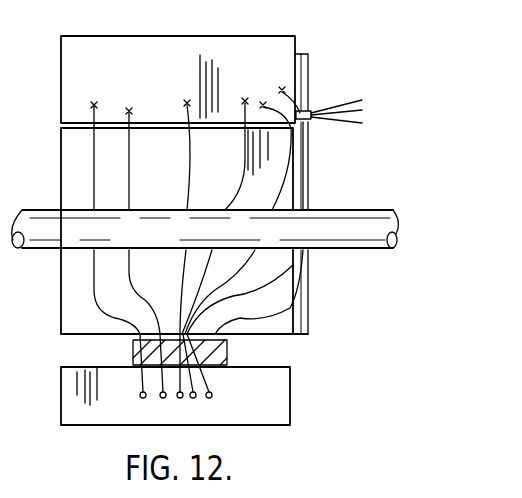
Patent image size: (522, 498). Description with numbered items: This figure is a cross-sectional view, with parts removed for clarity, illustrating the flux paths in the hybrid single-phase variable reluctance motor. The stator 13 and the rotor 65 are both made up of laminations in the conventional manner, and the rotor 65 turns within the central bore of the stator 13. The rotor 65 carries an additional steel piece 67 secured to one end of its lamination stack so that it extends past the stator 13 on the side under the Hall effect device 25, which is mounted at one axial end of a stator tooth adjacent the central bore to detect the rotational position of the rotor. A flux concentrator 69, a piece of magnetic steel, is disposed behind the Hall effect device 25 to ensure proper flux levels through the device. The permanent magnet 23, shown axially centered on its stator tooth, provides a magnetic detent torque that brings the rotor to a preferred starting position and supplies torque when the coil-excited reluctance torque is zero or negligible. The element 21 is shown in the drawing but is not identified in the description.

The stator 13 is at (233, 36).
The rotor 65 is at (61, 287).
The flux concentrator 69 is at (308, 72).
The Hall effect device 25 is at (313, 112).
The steel piece 67 is at (309, 186).
The pipe 21 is at (366, 250).
The permanent magnet 23 is at (228, 360).